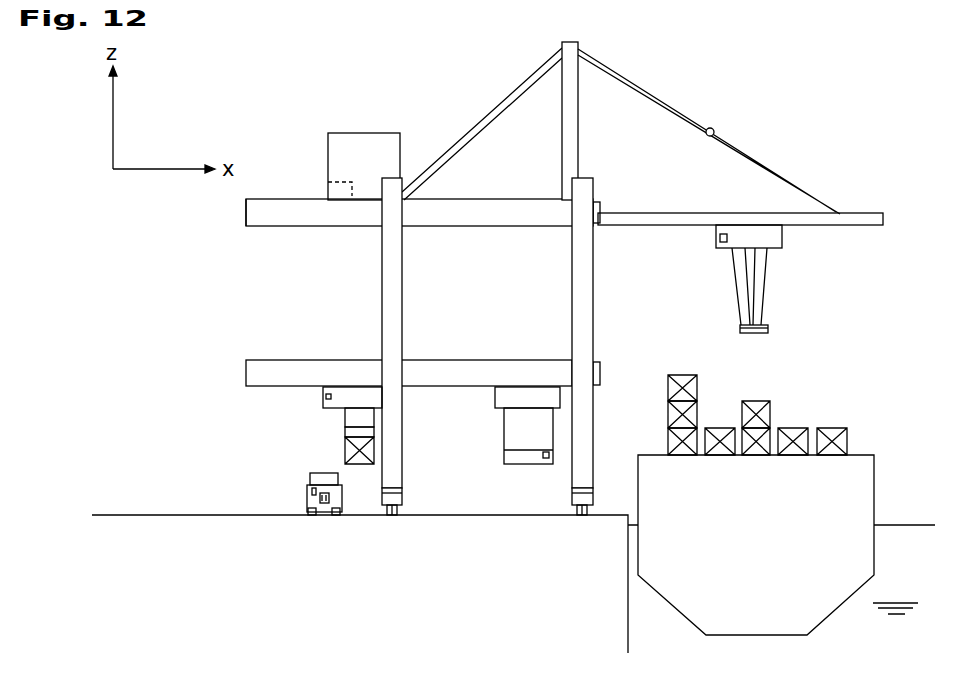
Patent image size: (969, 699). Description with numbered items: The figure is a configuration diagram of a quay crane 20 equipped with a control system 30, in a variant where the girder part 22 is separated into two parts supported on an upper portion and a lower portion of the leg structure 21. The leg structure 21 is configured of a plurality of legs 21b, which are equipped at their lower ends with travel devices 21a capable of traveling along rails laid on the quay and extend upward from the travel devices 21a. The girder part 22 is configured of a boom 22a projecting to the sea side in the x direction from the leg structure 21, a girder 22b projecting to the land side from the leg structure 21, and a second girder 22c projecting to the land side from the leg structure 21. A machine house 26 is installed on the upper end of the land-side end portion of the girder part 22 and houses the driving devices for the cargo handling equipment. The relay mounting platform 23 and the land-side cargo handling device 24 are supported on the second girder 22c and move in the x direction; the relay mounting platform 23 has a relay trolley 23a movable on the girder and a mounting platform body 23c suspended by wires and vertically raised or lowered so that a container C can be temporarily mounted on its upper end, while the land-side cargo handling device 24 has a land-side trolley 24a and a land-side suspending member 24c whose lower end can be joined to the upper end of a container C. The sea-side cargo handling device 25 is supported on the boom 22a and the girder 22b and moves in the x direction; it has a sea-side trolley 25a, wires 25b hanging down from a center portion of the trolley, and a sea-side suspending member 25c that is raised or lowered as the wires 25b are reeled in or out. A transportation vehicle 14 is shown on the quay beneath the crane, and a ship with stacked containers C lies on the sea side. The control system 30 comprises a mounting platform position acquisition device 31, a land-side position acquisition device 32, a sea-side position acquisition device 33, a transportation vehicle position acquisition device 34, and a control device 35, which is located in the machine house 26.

The transportation vehicle 14 is at (307, 500).
The quay crane 20 is at (471, 122).
The leg structure 21 is at (595, 268).
The travel devices 21a is at (404, 498).
The legs 21b is at (404, 342).
The girder part 22 is at (492, 198).
The boom 22a is at (855, 213).
The girder 22b is at (266, 198).
The second girder 22c is at (492, 360).
The relay mounting platform 23 is at (537, 386).
The relay trolley 23a is at (494, 397).
The mounting platform body 23c is at (508, 468).
The land-side cargo handling device 24 is at (358, 386).
The land-side trolley 24a is at (322, 397).
The land-side suspending member 24c is at (345, 430).
The sea-side cargo handling device 25 is at (727, 225).
The sea-side trolley 25a is at (784, 240).
The wires 25b is at (769, 291).
The sea-side suspending member 25c is at (770, 331).
The machine house 26 is at (371, 133).
The control system 30 is at (313, 122).
The mounting platform position acquisition device 31 is at (547, 460).
The land-side position acquisition device 32 is at (328, 394).
The sea-side position acquisition device 33 is at (716, 238).
The transportation vehicle position acquisition device 34 is at (307, 490).
The control device 35 is at (342, 180).
The container C is at (848, 441).